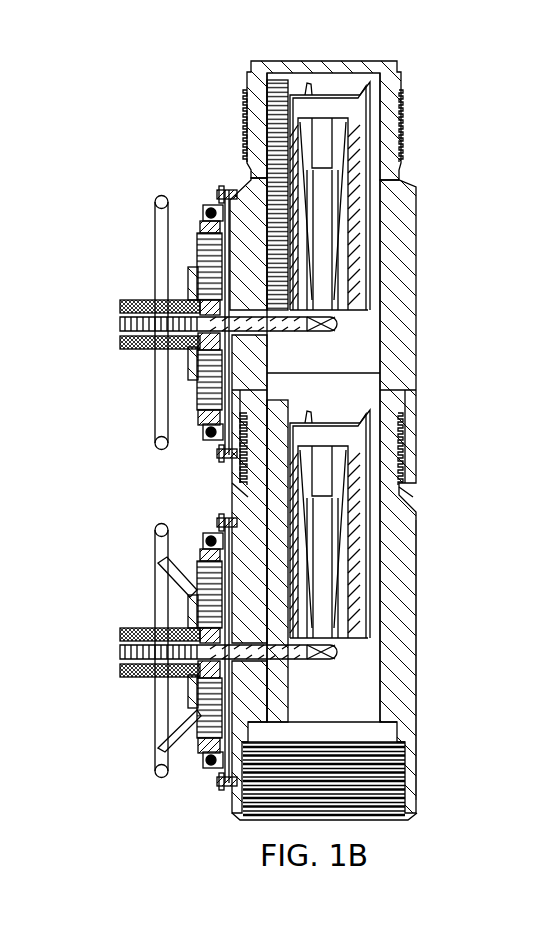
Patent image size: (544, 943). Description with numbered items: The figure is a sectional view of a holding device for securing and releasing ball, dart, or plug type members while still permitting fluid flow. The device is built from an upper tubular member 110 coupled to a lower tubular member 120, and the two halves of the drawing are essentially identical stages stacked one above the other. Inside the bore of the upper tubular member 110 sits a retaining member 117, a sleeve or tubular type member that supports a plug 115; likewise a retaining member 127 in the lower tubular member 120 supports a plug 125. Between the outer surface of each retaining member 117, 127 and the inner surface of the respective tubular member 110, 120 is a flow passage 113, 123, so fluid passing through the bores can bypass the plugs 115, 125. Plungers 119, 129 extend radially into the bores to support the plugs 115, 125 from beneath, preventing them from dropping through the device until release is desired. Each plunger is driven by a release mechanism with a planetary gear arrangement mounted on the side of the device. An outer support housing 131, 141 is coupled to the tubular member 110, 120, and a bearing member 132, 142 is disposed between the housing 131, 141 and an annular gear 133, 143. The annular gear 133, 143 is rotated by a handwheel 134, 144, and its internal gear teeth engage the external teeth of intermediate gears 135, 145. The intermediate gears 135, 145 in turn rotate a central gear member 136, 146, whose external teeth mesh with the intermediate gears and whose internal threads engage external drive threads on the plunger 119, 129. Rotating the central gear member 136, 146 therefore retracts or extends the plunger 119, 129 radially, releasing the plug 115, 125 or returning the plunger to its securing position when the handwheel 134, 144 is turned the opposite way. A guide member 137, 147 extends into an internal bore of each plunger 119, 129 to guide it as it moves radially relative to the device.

The upper tubular member 110 is at (416, 300).
The flow passage 113 is at (393, 145).
The plug 115 is at (343, 178).
The retaining member 117 is at (277, 145).
The plunger 119 is at (340, 327).
The lower tubular member 120 is at (417, 641).
The flow passage 123 is at (383, 557).
The plug 125 is at (340, 465).
The retaining member 127 is at (250, 492).
The plunger 129 is at (337, 660).
The outer support housing 131 is at (225, 192).
The bearing member 132 is at (210, 192).
The annular gear 133 is at (200, 228).
The handwheel 134 is at (155, 201).
The intermediate gear 135 is at (190, 275).
The central gear member 136 is at (195, 347).
The guide member 137 is at (120, 324).
The outer support housing 141 is at (205, 773).
The bearing member 142 is at (193, 757).
The annular gear 143 is at (198, 553).
The handwheel 144 is at (155, 529).
The intermediate gear 145 is at (190, 605).
The central gear member 146 is at (192, 627).
The guide member 147 is at (120, 652).